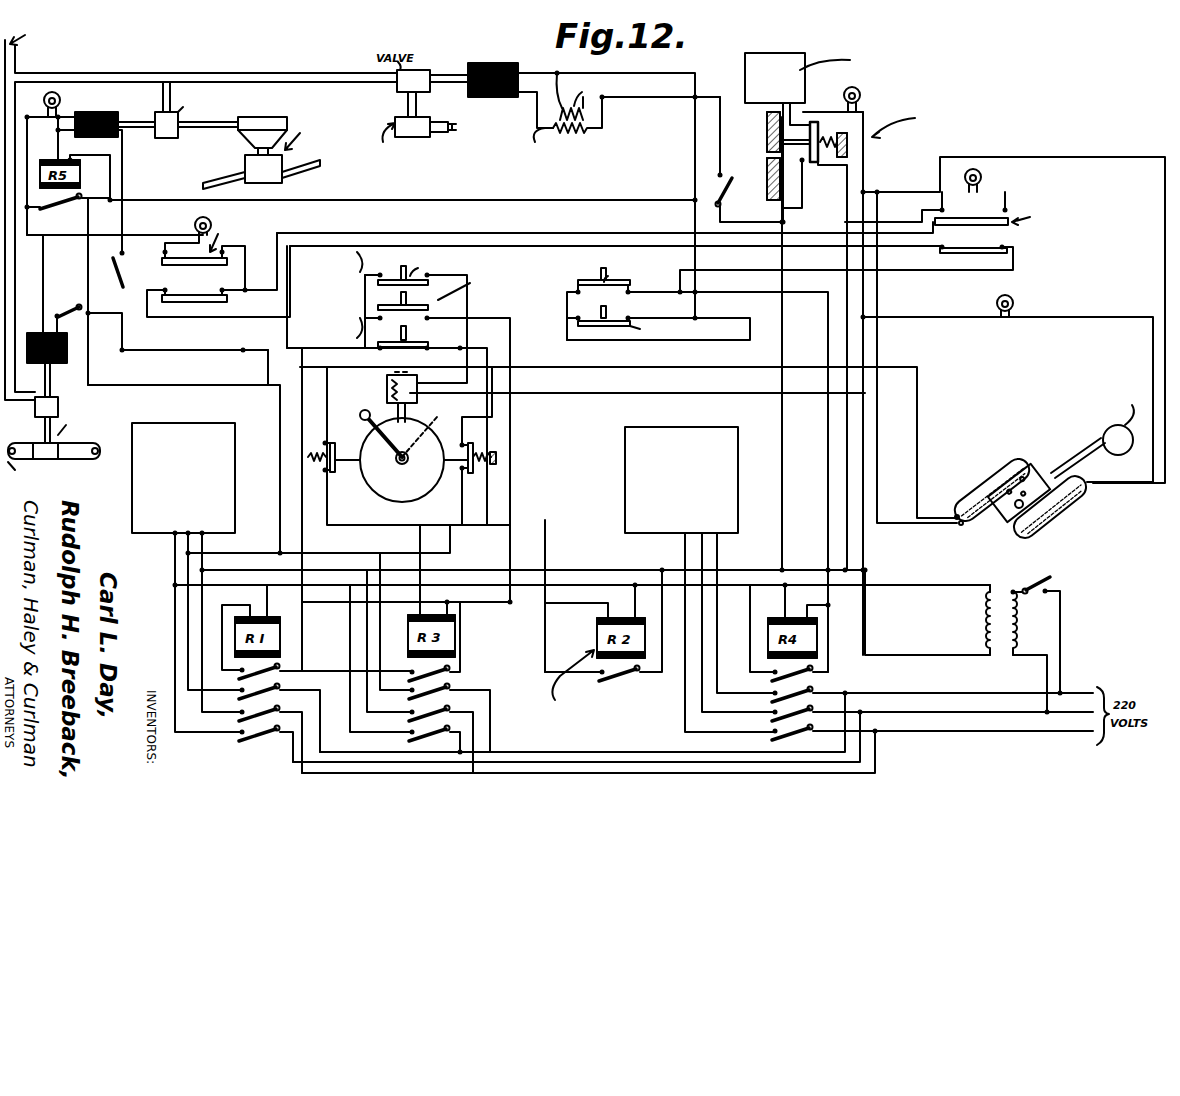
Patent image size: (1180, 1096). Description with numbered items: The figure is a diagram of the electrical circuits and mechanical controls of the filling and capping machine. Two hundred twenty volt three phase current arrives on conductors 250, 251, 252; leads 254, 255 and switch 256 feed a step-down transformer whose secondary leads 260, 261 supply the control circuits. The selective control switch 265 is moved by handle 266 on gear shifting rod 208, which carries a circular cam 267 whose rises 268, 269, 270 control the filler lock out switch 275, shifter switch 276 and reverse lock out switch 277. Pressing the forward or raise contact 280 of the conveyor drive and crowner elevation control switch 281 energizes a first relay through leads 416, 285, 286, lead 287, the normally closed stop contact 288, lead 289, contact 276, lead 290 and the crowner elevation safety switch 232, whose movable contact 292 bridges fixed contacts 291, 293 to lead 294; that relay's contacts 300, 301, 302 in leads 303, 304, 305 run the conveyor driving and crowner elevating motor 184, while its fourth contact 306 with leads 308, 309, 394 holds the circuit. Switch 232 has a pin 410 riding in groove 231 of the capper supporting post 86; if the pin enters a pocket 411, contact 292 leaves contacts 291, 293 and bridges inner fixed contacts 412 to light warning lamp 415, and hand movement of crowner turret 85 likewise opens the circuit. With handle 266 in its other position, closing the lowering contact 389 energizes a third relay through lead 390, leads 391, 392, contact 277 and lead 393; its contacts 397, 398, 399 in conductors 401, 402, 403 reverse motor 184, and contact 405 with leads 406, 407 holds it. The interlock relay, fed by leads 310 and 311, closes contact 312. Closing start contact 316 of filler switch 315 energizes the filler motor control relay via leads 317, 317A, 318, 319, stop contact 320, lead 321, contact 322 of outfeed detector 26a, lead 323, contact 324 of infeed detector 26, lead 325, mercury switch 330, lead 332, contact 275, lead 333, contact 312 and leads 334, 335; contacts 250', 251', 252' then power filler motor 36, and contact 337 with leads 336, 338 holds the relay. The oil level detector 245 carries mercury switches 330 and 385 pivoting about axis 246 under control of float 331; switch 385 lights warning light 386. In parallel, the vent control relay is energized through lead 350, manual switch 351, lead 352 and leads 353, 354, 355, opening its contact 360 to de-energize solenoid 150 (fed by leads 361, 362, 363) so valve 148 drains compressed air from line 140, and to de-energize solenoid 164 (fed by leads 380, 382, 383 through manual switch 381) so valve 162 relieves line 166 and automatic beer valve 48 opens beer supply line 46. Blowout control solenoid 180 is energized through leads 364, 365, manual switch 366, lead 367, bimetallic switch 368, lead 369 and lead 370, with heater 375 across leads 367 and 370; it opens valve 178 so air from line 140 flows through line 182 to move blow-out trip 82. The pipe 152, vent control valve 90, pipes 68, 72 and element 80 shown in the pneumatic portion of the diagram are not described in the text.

The air supply pipe 140 is at (18, 60).
The lamp 362 is at (44, 104).
The wire 361 is at (50, 175).
The solenoid valve 150 is at (115, 124).
The air pipe 152 is at (163, 97).
The valve 148 is at (156, 133).
The vent control valve 90 is at (291, 114).
The vent pipe 68 is at (212, 178).
The vent pipe 72 is at (300, 170).
The wire 353 is at (92, 176).
The wire 352 is at (124, 172).
The switch 360 is at (69, 289).
The wire 354 is at (148, 199).
The wire 355 is at (693, 213).
The wire 383 is at (45, 272).
The pipe 166 is at (18, 283).
The switch 381 is at (66, 305).
The wire 380 is at (100, 312).
The wire 382 is at (74, 326).
The solenoid valve 164 is at (47, 365).
The spring opened valve 162 is at (35, 412).
The valve stem 48 is at (45, 445).
The beer line 46 is at (100, 457).
The infeed detector 26 is at (176, 273).
The switch 351 is at (135, 243).
The switch 324 is at (218, 281).
The wire 325 is at (258, 290).
The wire 323 is at (284, 319).
The wire 350 is at (124, 349).
The wire 332 is at (300, 383).
The wire 363 is at (150, 385).
The conveyor driving and crowner elevating motor 184 is at (167, 423).
The motor lead 304 is at (172, 545).
The motor lead 305 is at (172, 558).
The motor lead 303 is at (205, 545).
The relay contact 306 is at (282, 676).
The relay contact 300 is at (279, 718).
The relay contact 301 is at (275, 740).
The relay contact 302 is at (246, 737).
The wire 308 is at (218, 608).
The wire 416 is at (248, 612).
The wire 260 is at (953, 586).
The wire 285 is at (305, 603).
The wire 309 is at (304, 645).
The wire 390 is at (418, 613).
The wire 391 is at (449, 608).
The wire 406 is at (456, 640).
The wire 407 is at (398, 668).
The relay contact 405 is at (455, 678).
The relay contact 397 is at (436, 690).
The relay contact 398 is at (421, 671).
The relay contact 399 is at (413, 670).
The wire 403 is at (475, 690).
The wire 402 is at (478, 712).
The wire 401 is at (478, 732).
The wire 286 is at (504, 620).
The conveyor drive and crowner elevation control 281 is at (360, 262).
The stop push button 288 is at (430, 280).
The push button stem 287 is at (366, 306).
The forward or raise push button 280 is at (434, 300).
The lower push button 394 is at (417, 334).
The wire 289 is at (470, 331).
The wire 389 is at (404, 350).
The relay coil 276 is at (386, 392).
The wire 290 is at (536, 393).
The wire 393 is at (512, 411).
The selective control switch 265 is at (395, 485).
The switch handle 269 is at (398, 433).
The conveyor drive position 266 is at (370, 426).
The contact 275 is at (334, 464).
The contact 277 is at (471, 473).
The switch drum 268 is at (365, 468).
The switch drum 267 is at (368, 480).
The switch drum 208 is at (418, 500).
The cam 270 is at (440, 482).
The wire 392 is at (463, 497).
The filler control 315 is at (567, 283).
The filler start button 316 is at (630, 284).
The wire 319 is at (565, 314).
The filler stop button 320 is at (610, 314).
The wire 318 is at (710, 292).
The wire 338 is at (692, 340).
The wire 321 is at (690, 308).
The filler motor 36 is at (642, 427).
The wire 335 is at (670, 570).
The wire 364 is at (784, 502).
The wire 310 is at (630, 602).
The wire 311 is at (556, 610).
The conveyor and filler interlock 333 is at (603, 686).
The relay contact 312 is at (616, 676).
The wire 334 is at (662, 665).
The wire 317 is at (782, 603).
The wire 317A is at (806, 612).
The wire 336 is at (818, 650).
The relay contact 337 is at (816, 672).
The relay contact 250' is at (810, 700).
The relay contact 251' is at (817, 719).
The relay contact 252' is at (825, 738).
The power line 250 is at (969, 686).
The power line 251 is at (976, 706).
The power line 252 is at (984, 725).
The wire 261 is at (920, 655).
The switch 256 is at (1045, 580).
The wire 254 is at (1062, 657).
The wire 255 is at (1046, 682).
The valve 178 is at (432, 81).
The solenoid 180 is at (493, 80).
The pipe 182 is at (418, 102).
The blowout trip 80 is at (416, 144).
The plunger 82 is at (452, 124).
The wire 370 is at (655, 73).
The wire 375 is at (570, 78).
The wire 369 is at (535, 115).
The bimetallic switch 368 is at (596, 128).
The wire 367 is at (648, 98).
The crowner turret 85 is at (778, 53).
The contact 412 is at (804, 166).
The contact 411 is at (767, 120).
The contact 231 is at (767, 134).
The connector 86 is at (767, 146).
The switch 410 is at (726, 178).
The wire 366 is at (756, 200).
The wire 365 is at (724, 214).
The wire 291 is at (847, 180).
The plunger 292 is at (814, 120).
The switch housing 293 is at (833, 341).
The crowner elevation safety switch 232 is at (900, 130).
The lamp 415 is at (861, 95).
The switch 294 is at (865, 112).
The outfeed detector 26a is at (1000, 228).
The switch 322 is at (940, 258).
The lamp 386 is at (1015, 303).
The float switch 330 is at (976, 484).
The float switch 385 is at (1050, 532).
The float arm 245 is at (1036, 465).
The float 331 is at (1104, 432).
The pivot 246 is at (1009, 519).